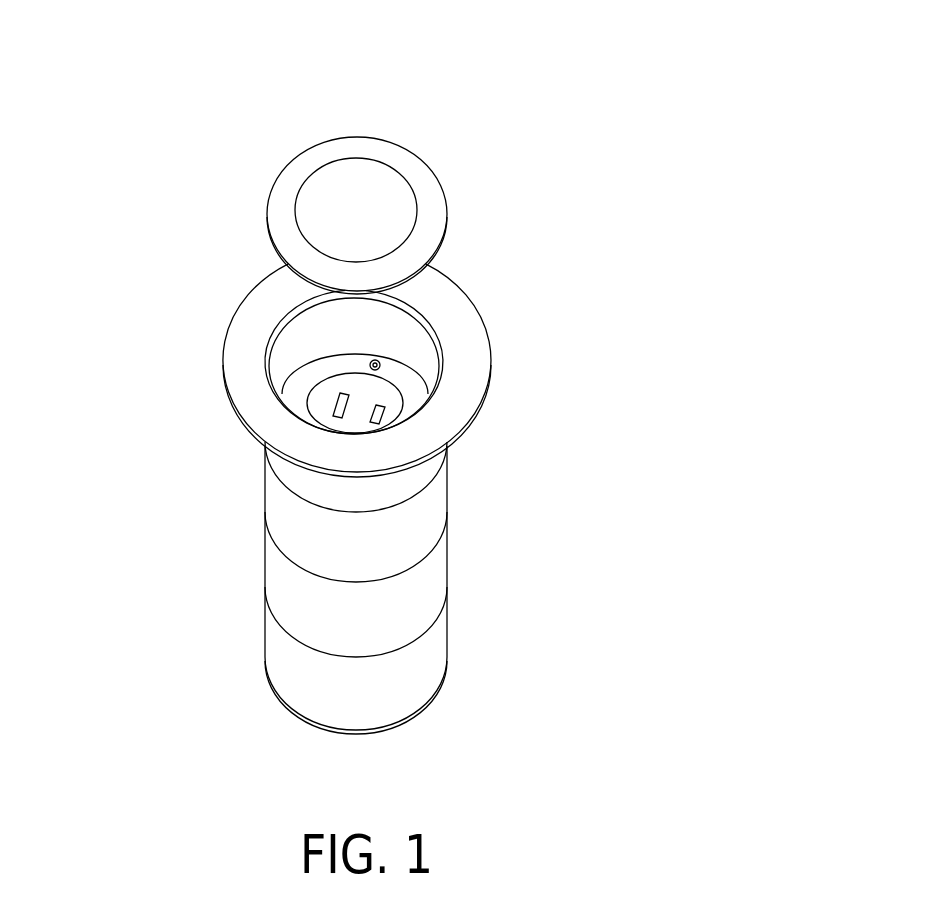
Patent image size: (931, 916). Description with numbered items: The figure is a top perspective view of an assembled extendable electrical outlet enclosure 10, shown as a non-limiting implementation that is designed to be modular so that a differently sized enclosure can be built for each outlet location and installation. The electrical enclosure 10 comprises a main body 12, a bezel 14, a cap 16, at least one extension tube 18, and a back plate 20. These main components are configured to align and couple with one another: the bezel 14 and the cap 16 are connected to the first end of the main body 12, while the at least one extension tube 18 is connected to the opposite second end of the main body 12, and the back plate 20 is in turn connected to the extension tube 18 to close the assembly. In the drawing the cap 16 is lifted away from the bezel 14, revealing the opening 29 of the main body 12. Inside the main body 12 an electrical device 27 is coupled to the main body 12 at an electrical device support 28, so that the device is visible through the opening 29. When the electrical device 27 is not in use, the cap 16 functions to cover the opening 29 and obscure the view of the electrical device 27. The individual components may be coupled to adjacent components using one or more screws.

The extendable electrical outlet enclosure 10 is at (99, 99).
The main body 12 is at (360, 500).
The bezel 14 is at (260, 402).
The cap 16 is at (360, 192).
The extension tube 18 is at (393, 690).
The back plate 20 is at (400, 728).
The electrical device 27 is at (352, 417).
The electrical device support 28 is at (315, 375).
The opening 29 is at (358, 330).